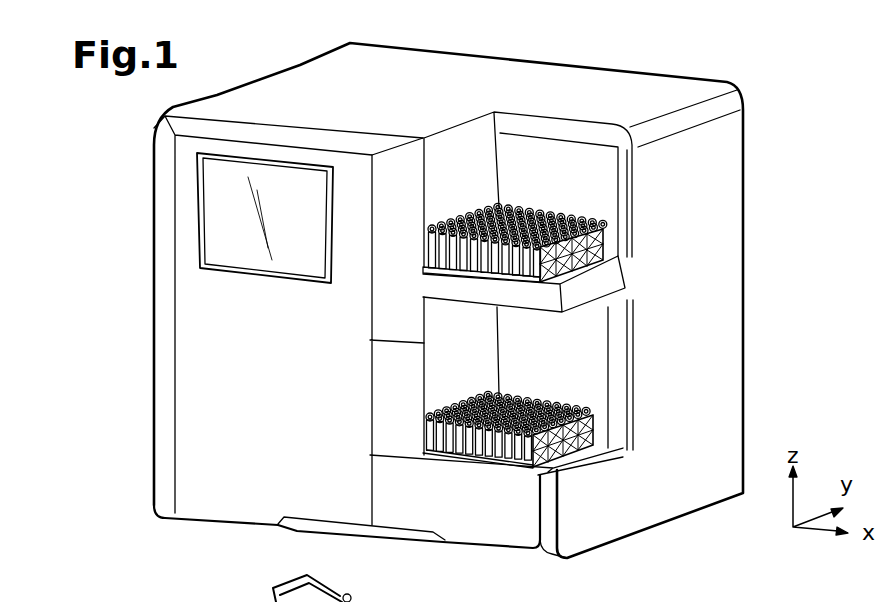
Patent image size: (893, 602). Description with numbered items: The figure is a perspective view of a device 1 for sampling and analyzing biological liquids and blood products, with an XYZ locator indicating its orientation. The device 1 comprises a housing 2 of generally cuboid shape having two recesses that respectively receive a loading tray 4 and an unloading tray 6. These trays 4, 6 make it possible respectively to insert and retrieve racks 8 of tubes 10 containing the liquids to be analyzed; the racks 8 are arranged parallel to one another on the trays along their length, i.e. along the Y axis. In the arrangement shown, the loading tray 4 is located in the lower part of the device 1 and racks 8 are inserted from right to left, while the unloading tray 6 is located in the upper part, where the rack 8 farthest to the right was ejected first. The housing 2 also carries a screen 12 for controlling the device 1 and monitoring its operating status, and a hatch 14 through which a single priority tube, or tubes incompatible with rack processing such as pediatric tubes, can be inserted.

The device 1 is at (197, 357).
The housing 2 is at (228, 493).
The loading tray 4 is at (640, 427).
The unloading tray 6 is at (645, 225).
The rack 8 is at (497, 463).
The tube 10 is at (583, 213).
The screen 12 is at (213, 233).
The hatch 14 is at (380, 397).